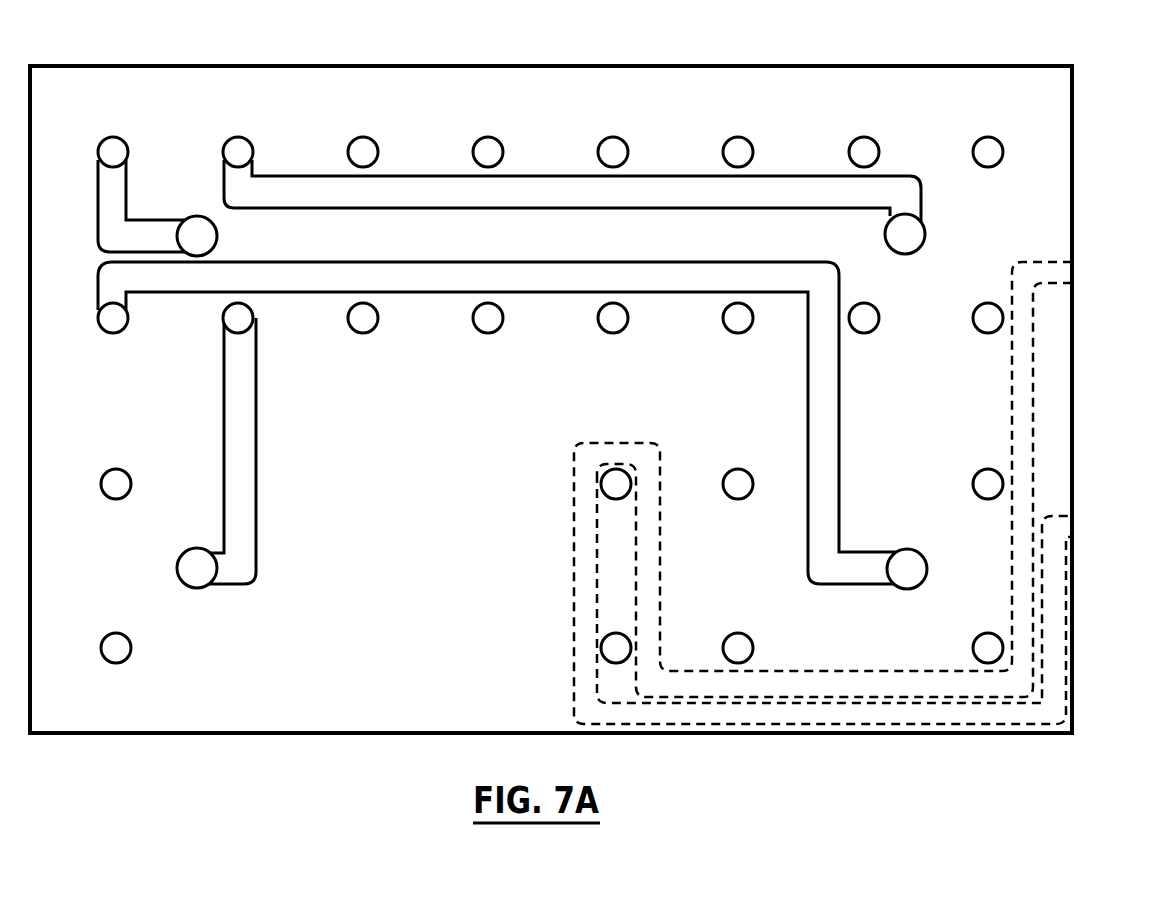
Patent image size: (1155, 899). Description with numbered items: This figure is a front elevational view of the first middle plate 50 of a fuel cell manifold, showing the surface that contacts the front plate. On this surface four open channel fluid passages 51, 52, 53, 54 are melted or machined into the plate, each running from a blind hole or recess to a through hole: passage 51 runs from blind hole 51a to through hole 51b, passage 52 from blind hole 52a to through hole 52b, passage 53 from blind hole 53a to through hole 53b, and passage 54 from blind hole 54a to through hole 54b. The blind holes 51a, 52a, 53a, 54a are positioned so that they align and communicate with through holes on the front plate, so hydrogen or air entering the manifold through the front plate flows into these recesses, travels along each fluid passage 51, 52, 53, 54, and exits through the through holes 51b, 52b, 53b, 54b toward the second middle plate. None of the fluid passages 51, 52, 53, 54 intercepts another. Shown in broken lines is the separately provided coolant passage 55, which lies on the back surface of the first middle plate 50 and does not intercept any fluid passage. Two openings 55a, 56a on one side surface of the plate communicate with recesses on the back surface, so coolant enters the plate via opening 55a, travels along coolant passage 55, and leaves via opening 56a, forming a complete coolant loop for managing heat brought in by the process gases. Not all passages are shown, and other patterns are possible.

The first middle plate 50 is at (358, 66).
The fluid passage 51 is at (112, 240).
The blind hole 51a is at (100, 145).
The through hole 51b is at (197, 233).
The fluid passage 52 is at (568, 190).
The blind hole 52a is at (228, 146).
The through hole 52b is at (917, 235).
The fluid passage 53 is at (572, 275).
The blind hole 53a is at (113, 322).
The through hole 53b is at (907, 555).
The fluid passage 54 is at (238, 447).
The blind hole 54a is at (232, 318).
The through hole 54b is at (190, 565).
The coolant passage 55 is at (1020, 404).
The opening 55a is at (1075, 264).
The opening 56a is at (1073, 528).